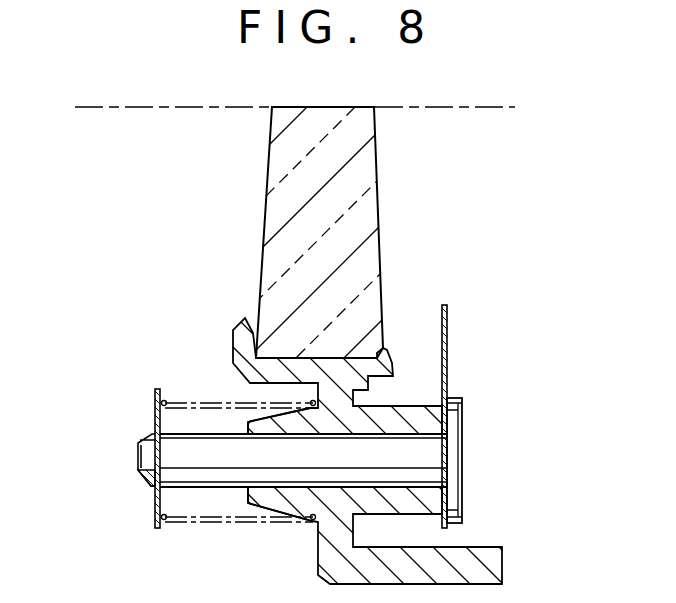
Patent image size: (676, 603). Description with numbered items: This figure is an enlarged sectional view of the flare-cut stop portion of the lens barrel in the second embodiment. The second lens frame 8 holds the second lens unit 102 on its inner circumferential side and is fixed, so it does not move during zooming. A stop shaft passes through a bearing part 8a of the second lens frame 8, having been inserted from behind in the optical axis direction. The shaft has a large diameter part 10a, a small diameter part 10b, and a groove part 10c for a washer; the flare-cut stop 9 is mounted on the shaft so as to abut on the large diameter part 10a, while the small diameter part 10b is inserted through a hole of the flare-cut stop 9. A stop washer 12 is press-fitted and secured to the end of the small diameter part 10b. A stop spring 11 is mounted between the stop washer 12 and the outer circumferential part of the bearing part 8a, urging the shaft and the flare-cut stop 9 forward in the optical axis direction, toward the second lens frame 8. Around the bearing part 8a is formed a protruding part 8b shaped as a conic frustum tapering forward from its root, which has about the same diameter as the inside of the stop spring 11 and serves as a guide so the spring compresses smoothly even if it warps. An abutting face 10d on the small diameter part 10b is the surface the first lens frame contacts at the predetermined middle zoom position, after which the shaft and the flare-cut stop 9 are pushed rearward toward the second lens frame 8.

The second lens unit 102 is at (367, 205).
The flare-cut stop 9 is at (447, 312).
The stop washer 12 is at (153, 402).
The abutting face 10d is at (136, 455).
The groove part 10c is at (140, 475).
The small diameter part 10b is at (187, 490).
The stop spring 11 is at (221, 513).
The protruding part 8b is at (268, 495).
The bearing part 8a is at (423, 437).
The large diameter part 10a is at (462, 505).
The second lens frame 8 is at (495, 563).